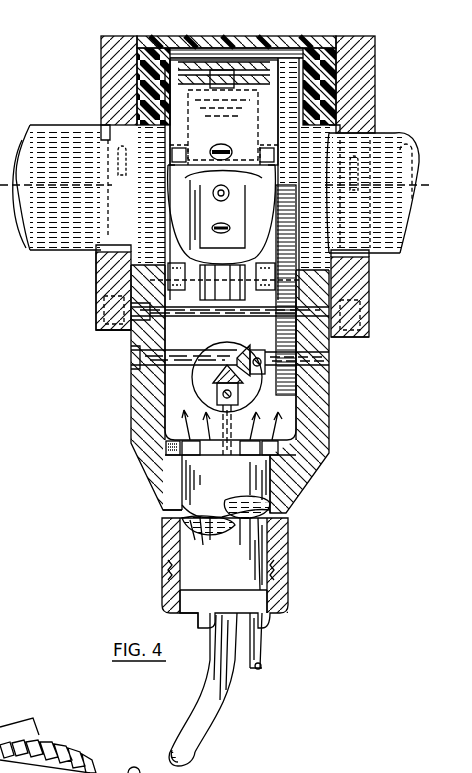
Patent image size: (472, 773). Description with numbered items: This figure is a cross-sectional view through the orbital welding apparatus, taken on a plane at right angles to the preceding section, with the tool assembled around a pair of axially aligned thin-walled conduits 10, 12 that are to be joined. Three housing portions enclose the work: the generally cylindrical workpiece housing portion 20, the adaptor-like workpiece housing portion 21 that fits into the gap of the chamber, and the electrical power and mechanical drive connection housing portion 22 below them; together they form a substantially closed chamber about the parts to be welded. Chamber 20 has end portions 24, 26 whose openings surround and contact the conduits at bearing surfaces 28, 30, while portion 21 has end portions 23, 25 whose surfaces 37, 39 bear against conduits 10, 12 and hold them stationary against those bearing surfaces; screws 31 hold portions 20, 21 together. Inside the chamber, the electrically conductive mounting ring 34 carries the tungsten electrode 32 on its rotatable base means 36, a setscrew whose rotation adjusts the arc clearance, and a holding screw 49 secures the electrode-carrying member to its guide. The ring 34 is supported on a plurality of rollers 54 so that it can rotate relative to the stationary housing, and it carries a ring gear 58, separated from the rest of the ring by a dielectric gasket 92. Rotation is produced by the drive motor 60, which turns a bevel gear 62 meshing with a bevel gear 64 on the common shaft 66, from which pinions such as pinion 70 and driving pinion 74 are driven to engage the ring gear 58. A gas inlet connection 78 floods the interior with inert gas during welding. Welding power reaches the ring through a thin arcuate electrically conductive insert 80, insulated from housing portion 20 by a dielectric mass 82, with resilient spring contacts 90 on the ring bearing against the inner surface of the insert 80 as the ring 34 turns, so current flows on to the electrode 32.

The thin-walled conduit 10 is at (42, 132).
The thin-walled conduit 12 is at (392, 200).
The workpiece housing portion 20 is at (228, 80).
The workpiece housing portion 21 is at (92, 322).
The electrical power and mechanical drive connection housing portion 22 is at (143, 483).
The end portion 23 is at (103, 297).
The end portion 24 is at (105, 64).
The end portion 25 is at (368, 296).
The end portion 26 is at (366, 73).
The bearing surface 28 is at (108, 127).
The bearing surface 30 is at (372, 133).
The screw 31 is at (100, 332).
The tungsten electrode 32 is at (215, 196).
The mounting ring 34 is at (224, 112).
The rotatable base means 36 is at (228, 195).
The surface 37 is at (100, 253).
The surface 39 is at (372, 265).
The holding screw 49 is at (232, 230).
The roller 54 is at (172, 268).
The ring gear 58 is at (331, 44).
The drive motor 60 is at (197, 580).
The bevel gear 62 is at (218, 391).
The bevel gear 64 is at (257, 357).
The common shaft 66 is at (150, 358).
The pinion 70 is at (300, 400).
The pinion 74 is at (295, 362).
The gas inlet connection 78 is at (264, 670).
The electrically conductive insert 80 is at (283, 38).
The dielectric mass 82 is at (172, 47).
The resilient spring contact 90 is at (238, 40).
The dielectric gasket 92 is at (277, 124).